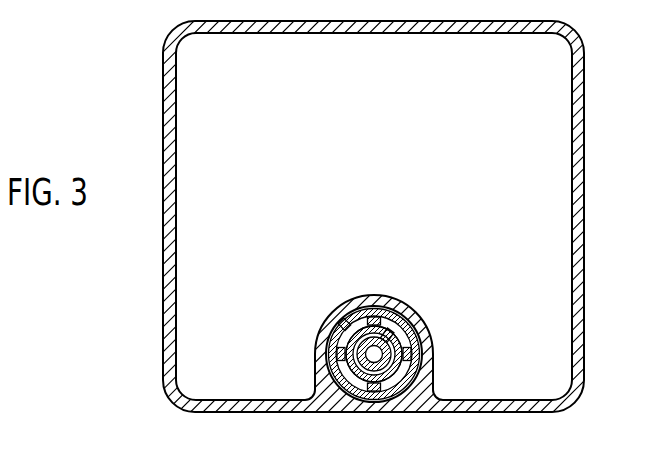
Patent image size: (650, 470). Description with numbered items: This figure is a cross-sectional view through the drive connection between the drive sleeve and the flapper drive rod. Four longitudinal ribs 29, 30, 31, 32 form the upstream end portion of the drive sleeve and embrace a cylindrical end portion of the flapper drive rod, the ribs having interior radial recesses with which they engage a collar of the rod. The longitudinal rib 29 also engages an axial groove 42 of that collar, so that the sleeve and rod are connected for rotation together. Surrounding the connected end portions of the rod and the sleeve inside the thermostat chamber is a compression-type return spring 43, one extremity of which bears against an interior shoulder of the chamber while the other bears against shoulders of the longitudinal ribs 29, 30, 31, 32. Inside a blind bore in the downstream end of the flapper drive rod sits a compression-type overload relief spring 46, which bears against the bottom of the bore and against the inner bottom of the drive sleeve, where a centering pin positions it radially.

The longitudinal rib 29 is at (377, 314).
The longitudinal rib 30 is at (337, 358).
The longitudinal rib 31 is at (374, 394).
The longitudinal rib 32 is at (412, 354).
The axial groove 42 is at (356, 331).
The return spring 43 is at (344, 318).
The overload relief spring 46 is at (397, 334).